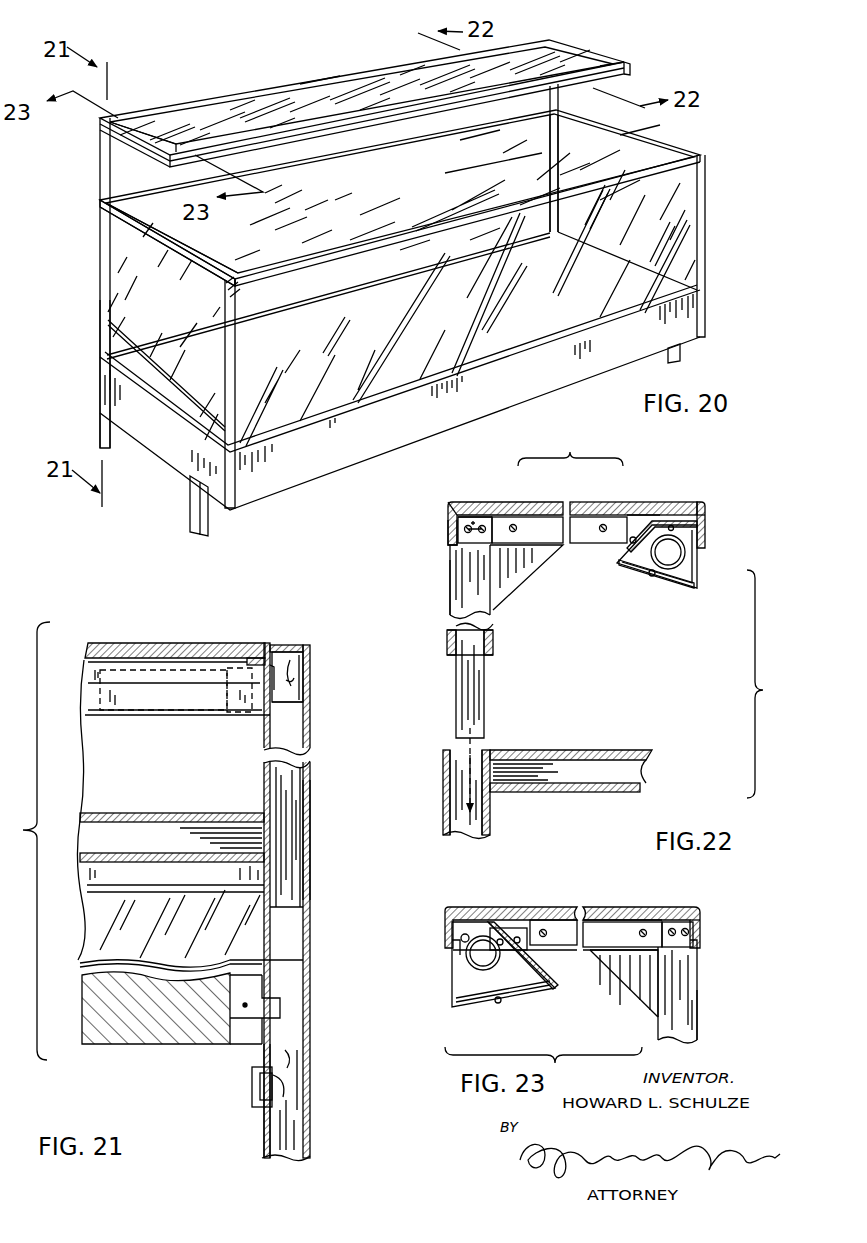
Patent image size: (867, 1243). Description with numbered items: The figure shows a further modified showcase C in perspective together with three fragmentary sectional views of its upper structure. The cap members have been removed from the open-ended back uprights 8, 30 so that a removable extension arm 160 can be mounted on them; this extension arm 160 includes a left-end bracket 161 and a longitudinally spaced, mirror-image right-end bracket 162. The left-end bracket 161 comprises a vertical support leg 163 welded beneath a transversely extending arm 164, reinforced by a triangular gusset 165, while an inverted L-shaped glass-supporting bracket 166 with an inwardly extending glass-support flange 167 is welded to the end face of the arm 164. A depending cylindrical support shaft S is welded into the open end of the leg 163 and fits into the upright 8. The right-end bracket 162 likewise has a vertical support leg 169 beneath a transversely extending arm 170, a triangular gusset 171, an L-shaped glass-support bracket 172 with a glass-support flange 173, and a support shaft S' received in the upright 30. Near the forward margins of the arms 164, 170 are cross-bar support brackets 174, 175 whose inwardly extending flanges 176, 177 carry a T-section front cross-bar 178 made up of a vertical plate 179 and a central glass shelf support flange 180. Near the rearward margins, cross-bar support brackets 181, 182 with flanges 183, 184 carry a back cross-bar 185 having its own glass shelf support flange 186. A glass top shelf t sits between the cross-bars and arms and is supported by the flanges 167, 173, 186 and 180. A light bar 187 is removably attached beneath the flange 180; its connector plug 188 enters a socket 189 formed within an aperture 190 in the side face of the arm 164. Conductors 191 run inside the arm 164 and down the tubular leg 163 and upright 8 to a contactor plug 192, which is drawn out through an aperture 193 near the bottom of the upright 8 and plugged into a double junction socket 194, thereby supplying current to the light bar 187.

In FIG. 20, the showcase C is at (710, 177).
In FIG. 20, the back upright 8 is at (99, 319).
In FIG. 21, the back upright 8 is at (305, 1138).
In FIG. 20, the back upright 30 is at (557, 170).
In FIG. 22, the back upright 30 is at (490, 830).
In FIG. 20, the extension arm 160 is at (263, 90).
In FIG. 20, the left-end bracket 161 is at (99, 167).
In FIG. 23, the left-end bracket 161 is at (693, 1037).
In FIG. 21, the left-end bracket 161 is at (311, 733).
In FIG. 20, the right-end bracket 162 is at (556, 42).
In FIG. 22, the right-end bracket 162 is at (460, 560).
In FIG. 20, the vertical support leg 163 is at (102, 192).
In FIG. 23, the vertical support leg 163 is at (690, 1007).
In FIG. 21, the vertical support leg 163 is at (311, 813).
In FIG. 20, the transversely extending arm 164 is at (128, 137).
In FIG. 23, the transversely extending arm 164 is at (620, 942).
In FIG. 20, the triangular gusset 165 is at (112, 143).
In FIG. 23, the triangular gusset 165 is at (643, 998).
In FIG. 23, the inverted L-shaped glass-supporting bracket 166 is at (558, 930).
In FIG. 21, the inverted L-shaped glass-supporting bracket 166 is at (263, 693).
In FIG. 23, the glass-support flange 167 is at (545, 922).
In FIG. 21, the glass-support flange 167 is at (245, 663).
In FIG. 22, the vertical support leg 169 is at (448, 602).
In FIG. 20, the transversely extending arm 170 is at (612, 53).
In FIG. 22, the transversely extending arm 170 is at (500, 503).
In FIG. 22, the triangular gusset 171 is at (507, 577).
In FIG. 22, the L-shaped glass-support bracket 172 is at (595, 530).
In FIG. 22, the glass-support flange 173 is at (540, 513).
In FIG. 23, the cross-bar support bracket 174 is at (513, 930).
In FIG. 22, the cross-bar support bracket 175 is at (643, 548).
In FIG. 23, the inwardly extending flange 176 is at (478, 920).
In FIG. 22, the inwardly extending flange 177 is at (695, 520).
In FIG. 22, the front cross-bar 178 is at (707, 517).
In FIG. 22, the vertical plate 179 is at (695, 550).
In FIG. 22, the glass shelf support flange 180 is at (683, 523).
In FIG. 22, the cross-bar support bracket 181 is at (480, 525).
In FIG. 23, the cross-bar support bracket 182 is at (695, 940).
In FIG. 22, the inwardly extending flange 183 is at (460, 518).
In FIG. 23, the inwardly extending flange 184 is at (700, 922).
In FIG. 20, the back cross-bar 185 is at (360, 72).
In FIG. 22, the back cross-bar 185 is at (450, 532).
In FIG. 23, the back cross-bar 185 is at (693, 922).
In FIG. 22, the glass shelf support flange 186 is at (460, 513).
In FIG. 23, the glass shelf support flange 186 is at (678, 930).
In FIG. 20, the light bar 187 is at (627, 77).
In FIG. 22, the light bar 187 is at (697, 587).
In FIG. 21, the connector plug 188 is at (311, 703).
In FIG. 21, the socket 189 is at (287, 662).
In FIG. 23, the aperture 190 is at (460, 947).
In FIG. 21, the aperture 190 is at (277, 667).
In FIG. 21, the conductors 191 is at (312, 672).
In FIG. 21, the contactor plug 192 is at (273, 1093).
In FIG. 21, the aperture 193 is at (263, 1057).
In FIG. 21, the double junction socket 194 is at (253, 1085).
In FIG. 20, the top shelf t is at (513, 63).
In FIG. 22, the top shelf t is at (640, 507).
In FIG. 23, the top shelf t is at (627, 907).
In FIG. 21, the support shaft S is at (311, 837).
In FIG. 22, the support shaft S' is at (493, 717).